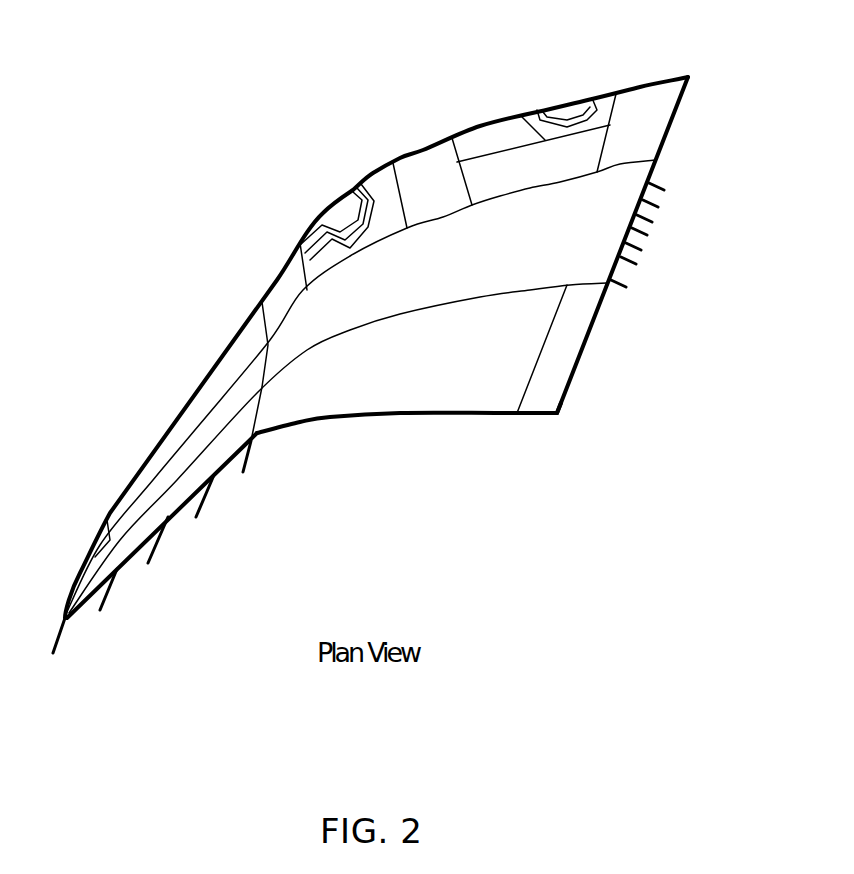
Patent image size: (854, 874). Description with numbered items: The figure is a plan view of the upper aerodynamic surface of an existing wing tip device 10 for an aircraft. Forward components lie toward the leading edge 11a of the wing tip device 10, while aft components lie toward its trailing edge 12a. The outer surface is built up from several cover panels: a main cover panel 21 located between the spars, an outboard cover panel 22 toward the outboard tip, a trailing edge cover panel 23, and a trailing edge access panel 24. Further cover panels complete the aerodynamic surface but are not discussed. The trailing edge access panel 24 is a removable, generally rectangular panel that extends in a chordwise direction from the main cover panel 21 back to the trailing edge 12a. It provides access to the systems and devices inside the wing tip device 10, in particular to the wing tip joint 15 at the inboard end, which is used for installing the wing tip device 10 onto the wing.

The wing tip device 10 is at (122, 683).
The leading edge 11a is at (588, 98).
The trailing edge 12a is at (500, 408).
The wing tip joint 15 is at (630, 263).
The main cover panel 21 is at (457, 253).
The outboard cover panel 22 is at (210, 462).
The trailing edge cover panel 23 is at (335, 390).
The trailing edge access panel 24 is at (553, 402).